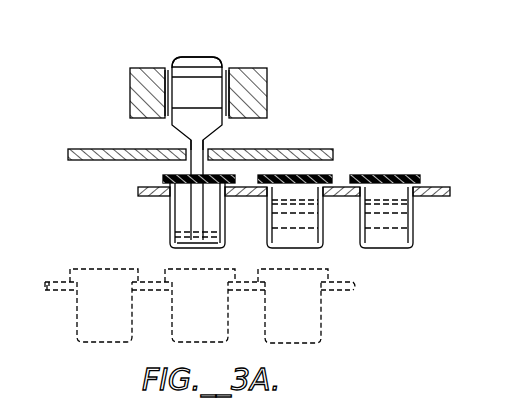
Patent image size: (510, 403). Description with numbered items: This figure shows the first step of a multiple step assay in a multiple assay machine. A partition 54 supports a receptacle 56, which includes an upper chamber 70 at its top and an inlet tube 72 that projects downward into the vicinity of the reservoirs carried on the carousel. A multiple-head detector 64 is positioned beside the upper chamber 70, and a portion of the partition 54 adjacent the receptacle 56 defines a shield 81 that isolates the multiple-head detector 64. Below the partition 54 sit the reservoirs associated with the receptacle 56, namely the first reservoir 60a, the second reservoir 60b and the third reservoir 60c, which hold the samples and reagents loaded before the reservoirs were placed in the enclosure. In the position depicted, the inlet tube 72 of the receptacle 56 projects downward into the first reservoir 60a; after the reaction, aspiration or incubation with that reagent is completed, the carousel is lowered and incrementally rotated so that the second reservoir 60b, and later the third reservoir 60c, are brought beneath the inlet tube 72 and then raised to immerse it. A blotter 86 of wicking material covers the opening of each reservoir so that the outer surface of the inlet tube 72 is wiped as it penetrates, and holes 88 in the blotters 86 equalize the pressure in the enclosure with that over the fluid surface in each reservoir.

The receptacle 56 is at (207, 44).
The upper chamber 70 is at (176, 58).
The multiple-head detector 64 is at (268, 95).
The shield 81 is at (225, 150).
The partition 54 is at (282, 150).
The inlet tube 72 is at (175, 175).
The holes 88 is at (372, 175).
The blotter 86 is at (410, 178).
The first reservoir 60a is at (175, 233).
The second reservoir 60b is at (290, 245).
The third reservoir 60c is at (362, 246).